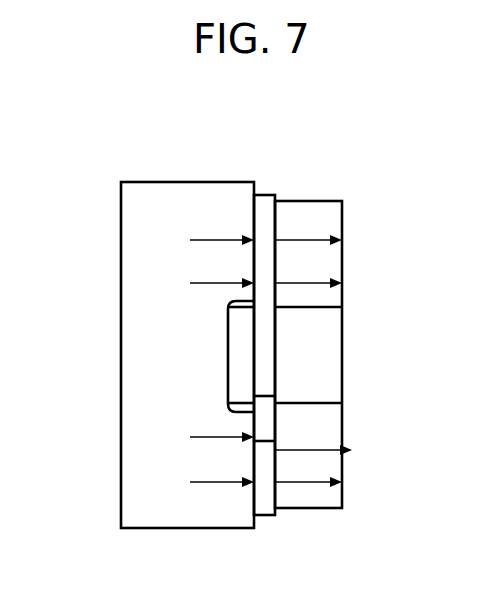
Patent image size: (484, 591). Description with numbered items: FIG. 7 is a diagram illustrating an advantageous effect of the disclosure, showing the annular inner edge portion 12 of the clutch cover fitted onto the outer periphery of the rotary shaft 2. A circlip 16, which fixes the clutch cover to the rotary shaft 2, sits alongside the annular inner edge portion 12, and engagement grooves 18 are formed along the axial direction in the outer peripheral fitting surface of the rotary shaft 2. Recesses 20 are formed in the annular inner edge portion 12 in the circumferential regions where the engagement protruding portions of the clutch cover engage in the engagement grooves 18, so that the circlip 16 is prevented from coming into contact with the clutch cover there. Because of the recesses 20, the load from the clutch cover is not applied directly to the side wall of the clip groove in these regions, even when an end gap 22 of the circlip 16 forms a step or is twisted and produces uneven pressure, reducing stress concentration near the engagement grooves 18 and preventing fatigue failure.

The rotary shaft 2 is at (306, 201).
The annular inner edge portion 12 is at (212, 182).
The circlip 16 is at (262, 195).
The engagement grooves 18 is at (318, 360).
The recesses 20 is at (228, 365).
The end gap 22 is at (270, 424).